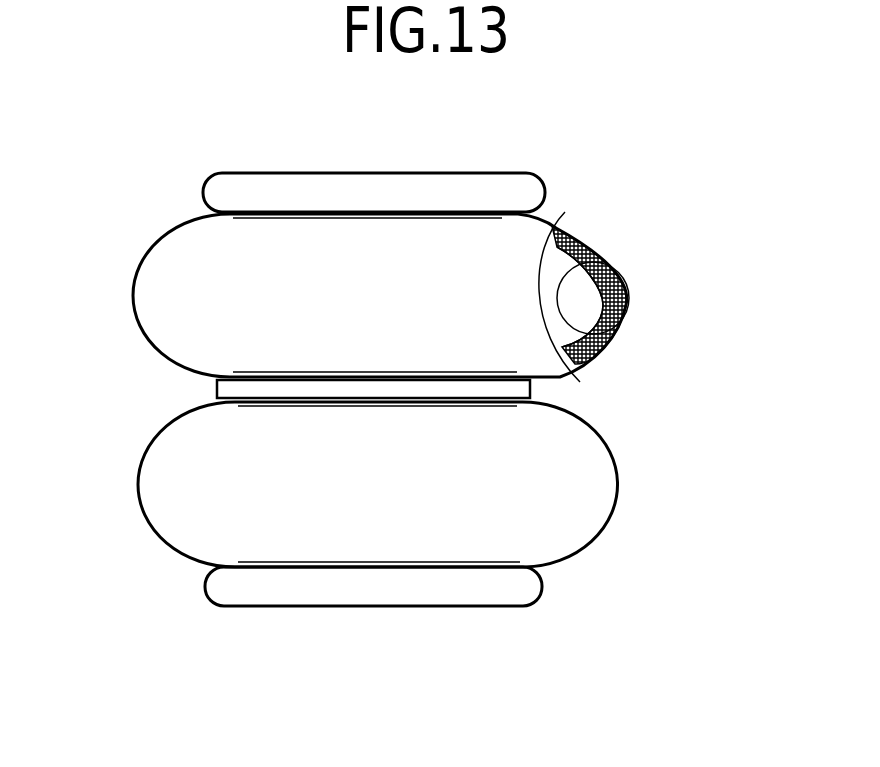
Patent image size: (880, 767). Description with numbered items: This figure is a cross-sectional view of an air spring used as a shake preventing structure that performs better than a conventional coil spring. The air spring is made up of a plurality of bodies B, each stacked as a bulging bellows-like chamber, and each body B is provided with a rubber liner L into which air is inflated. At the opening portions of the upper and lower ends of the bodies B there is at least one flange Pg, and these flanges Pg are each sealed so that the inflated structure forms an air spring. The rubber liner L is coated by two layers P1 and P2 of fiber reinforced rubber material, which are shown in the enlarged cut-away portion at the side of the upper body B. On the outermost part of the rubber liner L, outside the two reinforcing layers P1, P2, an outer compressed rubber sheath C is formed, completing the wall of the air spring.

The body B is at (133, 312).
The flange Pg is at (468, 660).
The layer of fiber reinforced rubber material P1 is at (596, 270).
The layer of fiber reinforced rubber material P2 is at (617, 279).
The outer compressed rubber sheath C is at (630, 306).
The rubber liner L is at (603, 337).